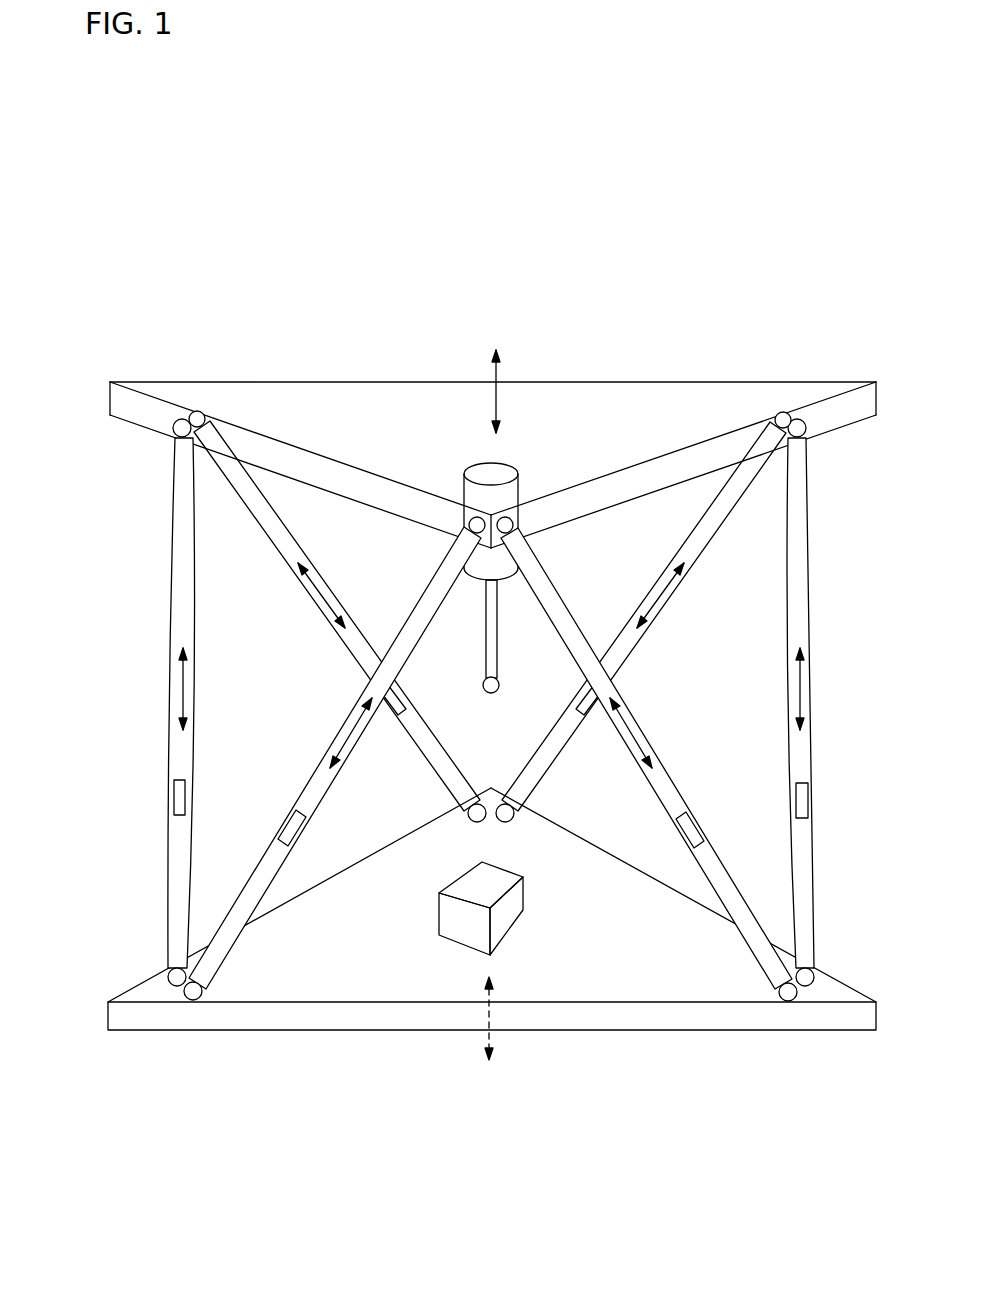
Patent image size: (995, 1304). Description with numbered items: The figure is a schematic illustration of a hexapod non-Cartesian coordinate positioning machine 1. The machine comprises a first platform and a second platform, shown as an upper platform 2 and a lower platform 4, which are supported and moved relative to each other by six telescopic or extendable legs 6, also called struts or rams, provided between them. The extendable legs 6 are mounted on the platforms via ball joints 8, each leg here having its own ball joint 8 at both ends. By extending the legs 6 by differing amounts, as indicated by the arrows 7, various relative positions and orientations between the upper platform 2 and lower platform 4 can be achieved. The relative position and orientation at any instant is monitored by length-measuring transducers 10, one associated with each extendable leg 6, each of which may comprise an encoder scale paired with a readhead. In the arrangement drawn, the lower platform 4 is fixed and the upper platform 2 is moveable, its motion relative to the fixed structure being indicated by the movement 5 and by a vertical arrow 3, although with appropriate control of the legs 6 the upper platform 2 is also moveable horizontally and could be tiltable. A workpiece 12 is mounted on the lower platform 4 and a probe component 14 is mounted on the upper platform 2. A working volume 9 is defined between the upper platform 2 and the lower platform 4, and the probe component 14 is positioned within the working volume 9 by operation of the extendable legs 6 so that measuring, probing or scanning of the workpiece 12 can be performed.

The non-Cartesian coordinate positioning machine 1 is at (158, 231).
The upper platform 2 is at (577, 442).
The vertical arrow 3 is at (485, 365).
The lower platform 4 is at (362, 958).
The movement of platform 5 is at (507, 1043).
The extendable leg 6 is at (180, 579).
The arrows 7 is at (178, 692).
The ball joint 8 is at (176, 977).
The working volume 9 is at (618, 817).
The length-measuring transducer 10 is at (181, 798).
The workpiece 12 is at (450, 912).
The probe component 14 is at (498, 645).